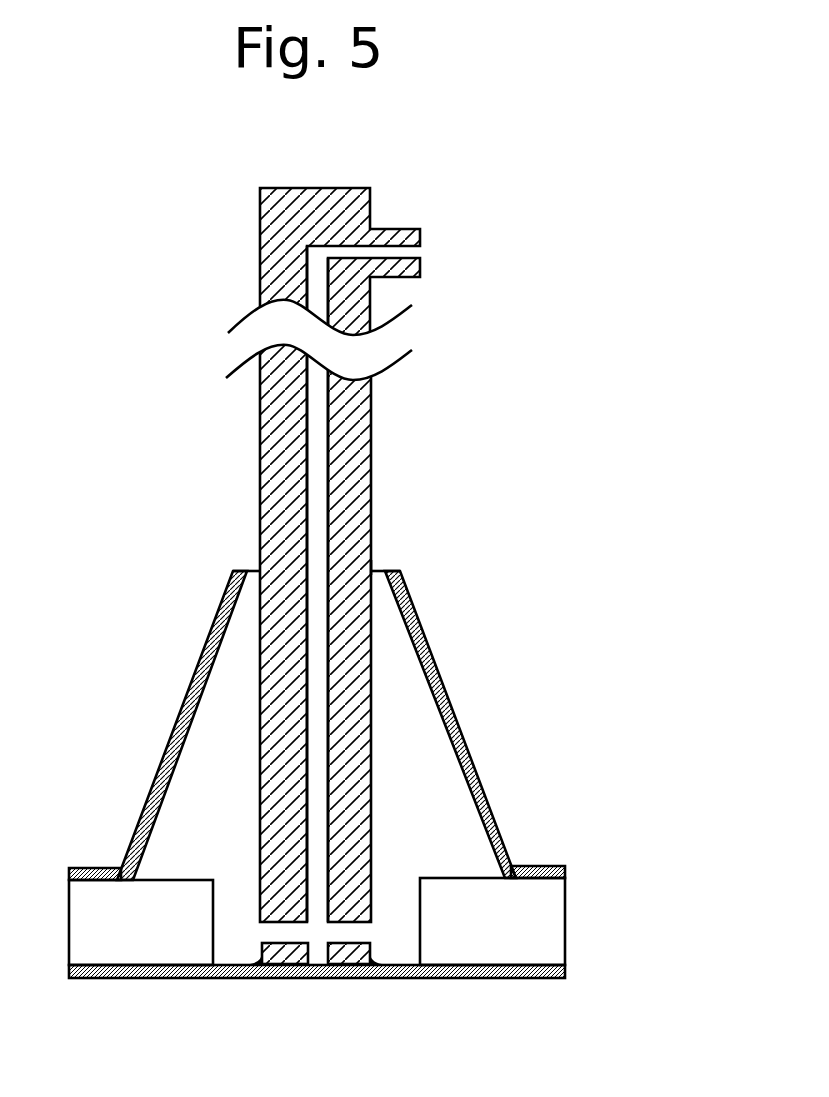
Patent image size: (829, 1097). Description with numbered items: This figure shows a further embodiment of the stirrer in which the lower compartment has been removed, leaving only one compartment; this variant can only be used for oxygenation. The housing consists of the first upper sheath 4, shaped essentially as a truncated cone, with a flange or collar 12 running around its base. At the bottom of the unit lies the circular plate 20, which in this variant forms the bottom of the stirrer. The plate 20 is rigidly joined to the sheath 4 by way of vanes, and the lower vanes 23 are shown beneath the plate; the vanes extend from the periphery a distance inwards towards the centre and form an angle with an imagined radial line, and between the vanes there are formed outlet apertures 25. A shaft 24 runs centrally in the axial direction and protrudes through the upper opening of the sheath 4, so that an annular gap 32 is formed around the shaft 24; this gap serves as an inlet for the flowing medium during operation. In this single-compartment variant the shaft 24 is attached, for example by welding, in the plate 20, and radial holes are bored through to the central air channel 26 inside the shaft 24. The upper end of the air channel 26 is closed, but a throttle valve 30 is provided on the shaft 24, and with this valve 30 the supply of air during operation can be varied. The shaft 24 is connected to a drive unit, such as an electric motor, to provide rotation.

The first upper sheath 4 is at (460, 727).
The flange or collar 12 is at (535, 866).
The circular plate 20 is at (273, 978).
The lower vanes 23 is at (523, 925).
The shaft 24 is at (371, 462).
The upper outlet apertures 25 is at (262, 932).
The central air channel 26 is at (315, 690).
The throttle valve 30 is at (431, 252).
The annular gap 32 is at (382, 558).